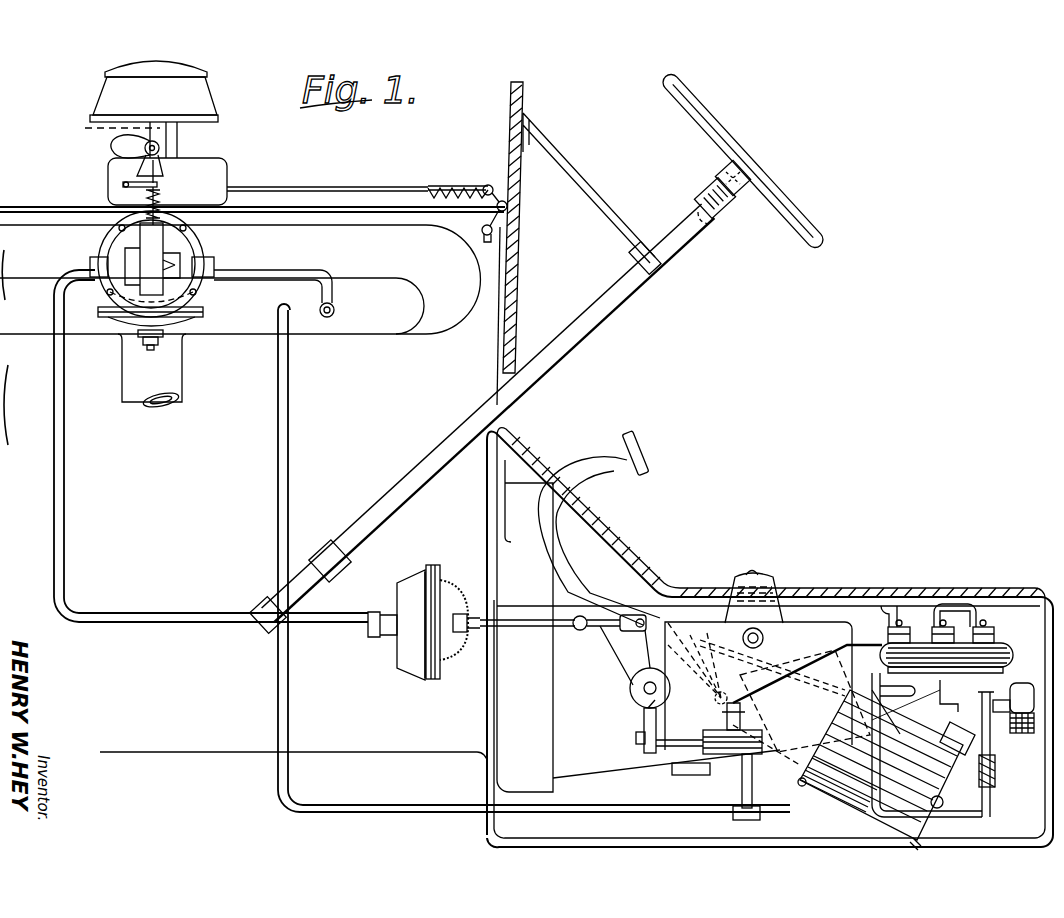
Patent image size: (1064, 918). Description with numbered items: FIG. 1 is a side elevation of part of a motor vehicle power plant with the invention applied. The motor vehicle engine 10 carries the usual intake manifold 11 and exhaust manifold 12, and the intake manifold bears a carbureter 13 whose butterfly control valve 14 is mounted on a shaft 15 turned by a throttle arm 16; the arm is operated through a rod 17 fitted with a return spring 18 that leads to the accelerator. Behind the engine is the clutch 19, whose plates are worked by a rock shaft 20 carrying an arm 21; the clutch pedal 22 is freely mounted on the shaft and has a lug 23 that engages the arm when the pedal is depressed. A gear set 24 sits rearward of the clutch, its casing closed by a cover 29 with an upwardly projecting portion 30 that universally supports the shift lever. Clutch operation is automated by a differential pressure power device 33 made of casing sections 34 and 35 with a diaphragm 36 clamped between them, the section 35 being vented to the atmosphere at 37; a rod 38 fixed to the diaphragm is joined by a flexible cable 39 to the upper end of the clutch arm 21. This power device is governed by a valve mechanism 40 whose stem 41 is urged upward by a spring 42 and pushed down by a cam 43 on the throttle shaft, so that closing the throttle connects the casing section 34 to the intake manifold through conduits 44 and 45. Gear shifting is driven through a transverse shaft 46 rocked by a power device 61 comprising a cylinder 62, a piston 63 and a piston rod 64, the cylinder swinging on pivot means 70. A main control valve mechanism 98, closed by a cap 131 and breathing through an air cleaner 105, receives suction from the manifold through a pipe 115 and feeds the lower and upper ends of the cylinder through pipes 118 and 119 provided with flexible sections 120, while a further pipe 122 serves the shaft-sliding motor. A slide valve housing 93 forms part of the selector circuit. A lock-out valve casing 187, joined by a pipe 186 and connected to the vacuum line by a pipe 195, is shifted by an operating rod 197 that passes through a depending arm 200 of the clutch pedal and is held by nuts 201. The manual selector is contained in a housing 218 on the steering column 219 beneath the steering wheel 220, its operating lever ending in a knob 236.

The motor vehicle engine 10 is at (252, 491).
The intake manifold 11 is at (232, 332).
The exhaust manifold 12 is at (240, 279).
The carbureter 13 is at (222, 158).
The butterfly control valve 14 is at (106, 129).
The shaft 15 is at (160, 147).
The arm 16 is at (137, 167).
The rod 17 is at (333, 186).
The return spring 18 is at (470, 187).
The clutch 19 is at (607, 706).
The rock shaft 20 is at (634, 696).
The arm 21 is at (622, 662).
The clutch pedal 22 is at (622, 462).
The lug 23 is at (694, 673).
The gear set 24 is at (802, 625).
The cover 29 is at (856, 606).
The upwardly projecting portion 30 is at (722, 582).
The differential pressure power device 33 is at (420, 675).
The casing section 34 is at (410, 648).
The casing section 35 is at (452, 660).
The diaphragm 36 is at (440, 556).
The vent 37 is at (468, 600).
The rod 38 is at (524, 630).
The cable 39 is at (592, 628).
The valve mechanism 40 is at (208, 240).
The stem 41 is at (128, 189).
The spring 42 is at (160, 212).
The cam 43 is at (112, 147).
The conduit 44 is at (283, 268).
The conduit 45 is at (65, 441).
The shaft 46 is at (763, 642).
The power device 61 is at (796, 790).
The cylinder 62 is at (892, 840).
The piston 63 is at (887, 765).
The piston rod 64 is at (805, 701).
The pivot means 70 is at (943, 803).
The housing 93 is at (756, 663).
The main control valve mechanism 98 is at (1000, 650).
The air cleaner 105 is at (1025, 733).
The pipe 115 is at (277, 441).
The pipe 118 is at (992, 800).
The pipe 119 is at (897, 718).
The flexible section 120 is at (968, 760).
The pipe 122 is at (960, 690).
The cap 131 is at (1005, 643).
The pipe 186 is at (846, 652).
The cylindrical casing 187 is at (766, 750).
The pipe 195 is at (740, 778).
The operating rod 197 is at (686, 740).
The depending arm 200 is at (644, 730).
The nuts 201 is at (668, 760).
The housing 218 is at (735, 228).
The steering column 219 is at (600, 296).
The steering wheel 220 is at (760, 134).
The knob 236 is at (752, 170).